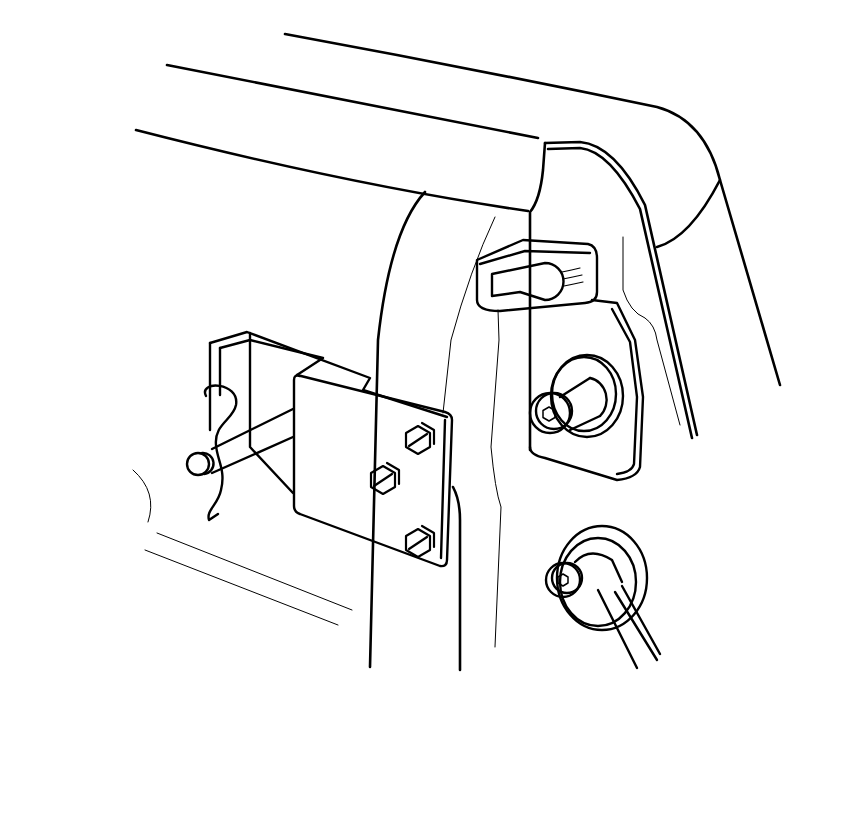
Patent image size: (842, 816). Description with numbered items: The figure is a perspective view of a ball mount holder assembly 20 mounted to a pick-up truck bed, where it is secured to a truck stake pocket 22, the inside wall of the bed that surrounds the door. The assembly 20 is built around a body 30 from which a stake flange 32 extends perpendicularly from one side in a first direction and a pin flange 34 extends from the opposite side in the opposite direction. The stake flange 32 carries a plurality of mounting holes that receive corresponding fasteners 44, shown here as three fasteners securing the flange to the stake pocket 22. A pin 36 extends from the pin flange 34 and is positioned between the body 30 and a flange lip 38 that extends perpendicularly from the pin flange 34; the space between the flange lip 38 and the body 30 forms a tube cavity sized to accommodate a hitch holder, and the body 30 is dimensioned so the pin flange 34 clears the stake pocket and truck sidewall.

The ball mount holder assembly 20 is at (446, 515).
The truck stake pocket 22 is at (400, 299).
The body 30 is at (272, 487).
The stake flange 32 is at (344, 466).
The pin flange 34 is at (290, 380).
The pin 36 is at (252, 518).
The flange lip 38 is at (208, 364).
The fasteners 44 is at (383, 498).